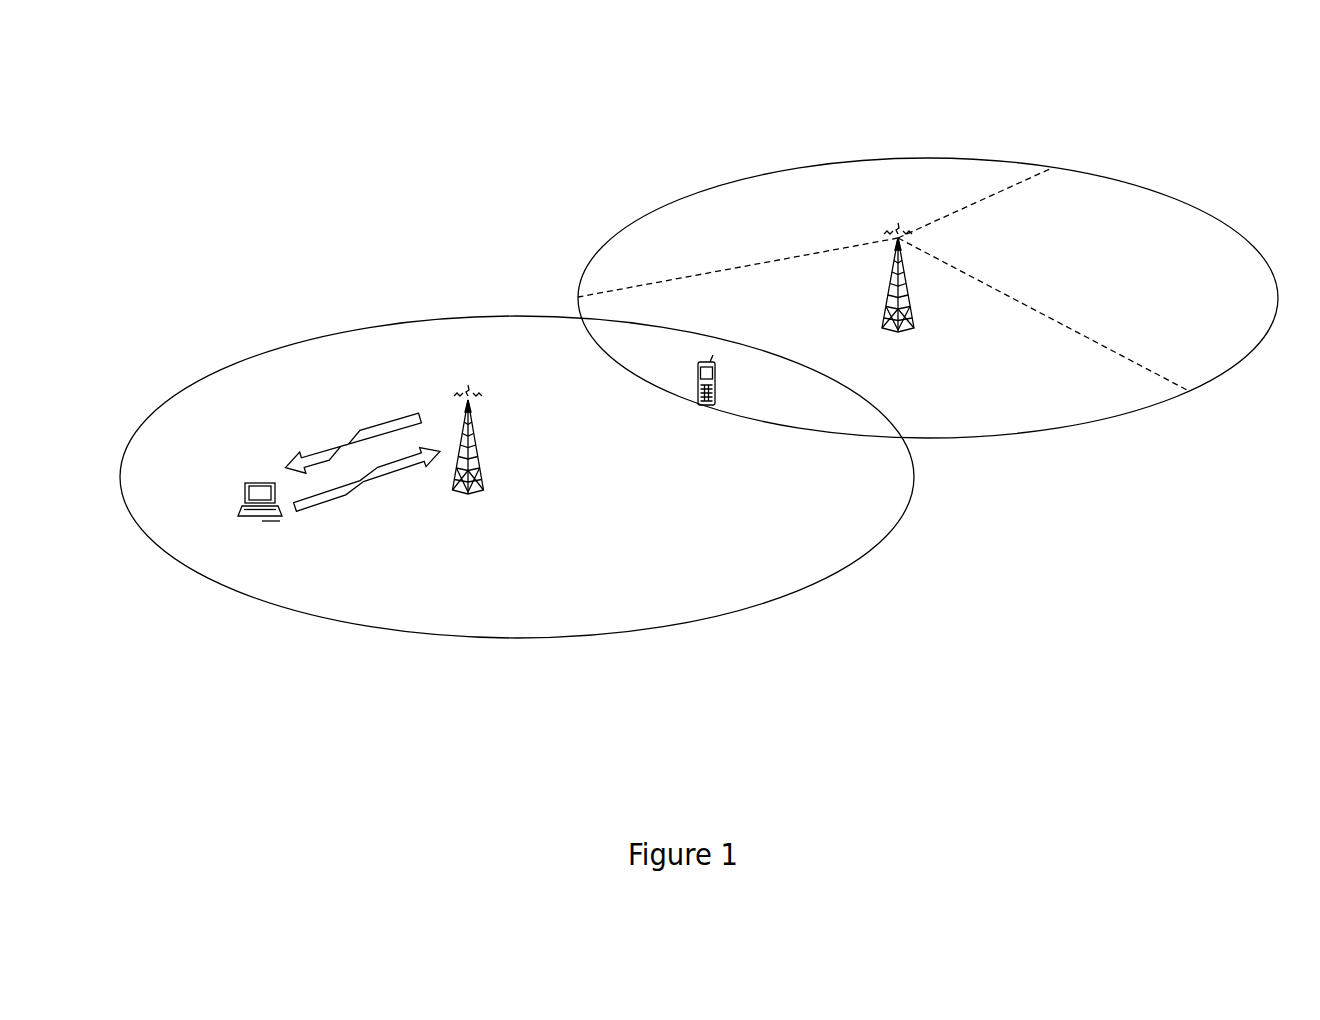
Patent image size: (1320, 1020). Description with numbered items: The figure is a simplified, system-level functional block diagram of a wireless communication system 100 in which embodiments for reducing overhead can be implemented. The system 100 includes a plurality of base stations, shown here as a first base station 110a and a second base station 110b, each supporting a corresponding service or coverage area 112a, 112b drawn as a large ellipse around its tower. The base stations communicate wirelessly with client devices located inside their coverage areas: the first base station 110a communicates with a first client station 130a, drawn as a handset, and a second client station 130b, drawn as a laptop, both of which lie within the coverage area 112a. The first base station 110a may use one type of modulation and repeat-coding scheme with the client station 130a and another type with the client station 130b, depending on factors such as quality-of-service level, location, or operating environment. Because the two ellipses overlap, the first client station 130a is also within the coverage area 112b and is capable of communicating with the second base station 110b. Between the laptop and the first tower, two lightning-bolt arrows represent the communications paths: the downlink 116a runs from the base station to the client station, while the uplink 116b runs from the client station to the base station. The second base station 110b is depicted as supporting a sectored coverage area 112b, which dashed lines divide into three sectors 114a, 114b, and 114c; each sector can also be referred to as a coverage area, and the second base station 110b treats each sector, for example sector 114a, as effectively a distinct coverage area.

The wireless communication system 100 is at (1062, 68).
The first base station 110a is at (517, 442).
The second base station 110b is at (950, 293).
The coverage area 112a is at (428, 318).
The sectored coverage area 112b is at (873, 156).
The sector 114a is at (1012, 410).
The sector 114b is at (827, 213).
The sector 114c is at (1230, 302).
The downlink 116a is at (390, 424).
The uplink 116b is at (373, 493).
The first client station 130a is at (720, 395).
The second client station 130b is at (237, 498).